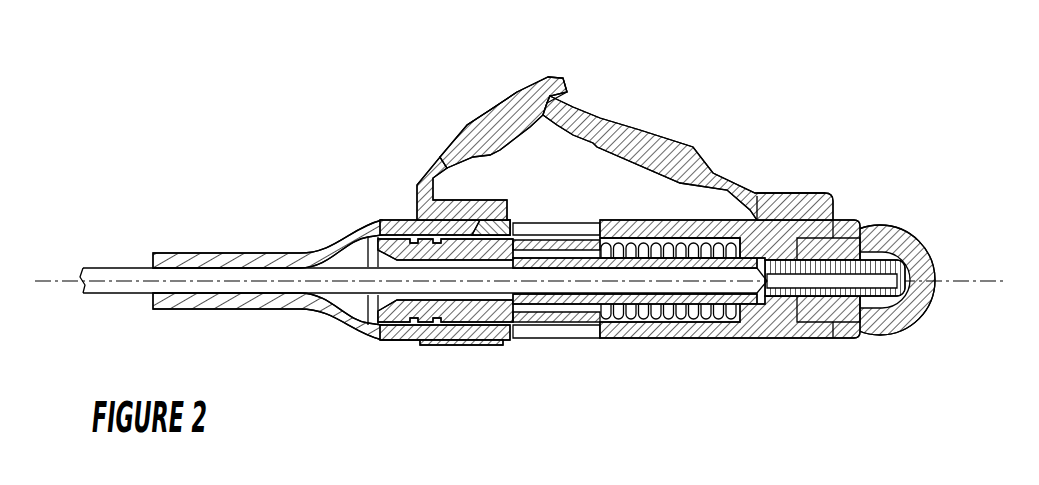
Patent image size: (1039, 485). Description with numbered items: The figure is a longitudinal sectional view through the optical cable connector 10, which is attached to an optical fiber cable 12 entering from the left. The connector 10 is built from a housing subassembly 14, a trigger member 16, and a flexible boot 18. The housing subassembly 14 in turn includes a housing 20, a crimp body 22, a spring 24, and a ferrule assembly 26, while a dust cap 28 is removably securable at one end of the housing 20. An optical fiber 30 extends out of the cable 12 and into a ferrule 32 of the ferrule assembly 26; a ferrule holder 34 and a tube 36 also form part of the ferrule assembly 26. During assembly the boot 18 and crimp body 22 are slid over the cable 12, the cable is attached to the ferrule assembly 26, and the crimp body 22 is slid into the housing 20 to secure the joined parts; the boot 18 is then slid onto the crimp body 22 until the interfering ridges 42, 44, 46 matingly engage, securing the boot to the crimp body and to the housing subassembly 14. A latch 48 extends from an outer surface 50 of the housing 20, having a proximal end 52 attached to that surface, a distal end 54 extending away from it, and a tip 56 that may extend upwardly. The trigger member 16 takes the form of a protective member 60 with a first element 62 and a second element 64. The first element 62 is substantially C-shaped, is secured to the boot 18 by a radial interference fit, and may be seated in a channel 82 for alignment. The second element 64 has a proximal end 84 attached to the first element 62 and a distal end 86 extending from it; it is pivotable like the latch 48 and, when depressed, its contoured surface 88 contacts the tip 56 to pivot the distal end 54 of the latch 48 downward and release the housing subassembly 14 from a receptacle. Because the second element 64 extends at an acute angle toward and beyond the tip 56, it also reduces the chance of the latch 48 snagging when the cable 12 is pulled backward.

The connector 10 is at (730, 88).
The optical fiber cable 12 is at (137, 295).
The housing subassembly 14 is at (652, 352).
The trigger member 16 is at (413, 205).
The flexible boot 18 is at (350, 232).
The housing 20 is at (727, 339).
The crimp body 22 is at (507, 340).
The spring 24 is at (687, 243).
The ferrule assembly 26 is at (797, 256).
The dust cap 28 is at (933, 267).
The optical fiber 30 is at (860, 283).
The ferrule 32 is at (903, 297).
The ferrule holder 34 is at (790, 303).
The tube 36 is at (367, 323).
The interfering ridge 42 is at (487, 238).
The interfering ridge 44 is at (540, 237).
The interfering ridge 46 is at (515, 242).
The latch 48 is at (685, 160).
The outer surface 50 is at (623, 220).
The proximal end 52 is at (813, 210).
The distal end 54 is at (575, 120).
The tip 56 is at (563, 100).
The protective member 60 is at (443, 162).
The first element 62 is at (437, 345).
The second element 64 is at (507, 103).
The channel 82 is at (417, 341).
The proximal end 84 is at (417, 182).
The distal end 86 is at (566, 77).
The contoured surface 88 is at (490, 130).